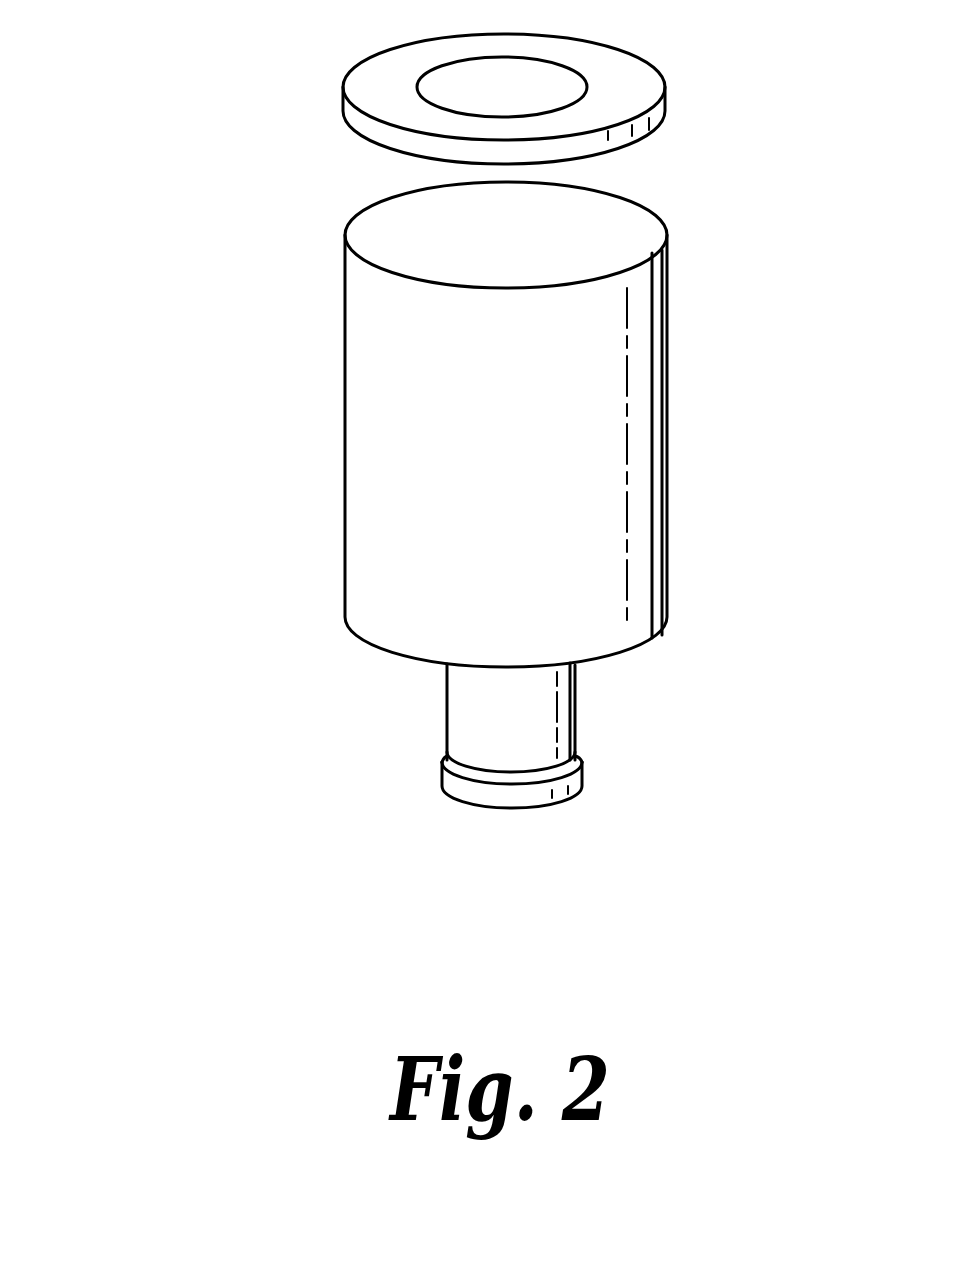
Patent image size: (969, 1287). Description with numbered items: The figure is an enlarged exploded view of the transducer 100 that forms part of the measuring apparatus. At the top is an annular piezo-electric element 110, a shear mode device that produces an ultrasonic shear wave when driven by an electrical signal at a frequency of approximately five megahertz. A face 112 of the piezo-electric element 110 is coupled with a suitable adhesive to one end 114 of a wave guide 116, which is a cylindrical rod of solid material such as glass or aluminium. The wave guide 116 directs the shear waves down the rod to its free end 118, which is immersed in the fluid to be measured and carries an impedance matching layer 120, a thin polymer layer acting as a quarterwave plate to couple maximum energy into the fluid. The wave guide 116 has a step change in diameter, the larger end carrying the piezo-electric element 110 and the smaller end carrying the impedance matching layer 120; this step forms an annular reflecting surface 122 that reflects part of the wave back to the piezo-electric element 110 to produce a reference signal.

The transducer 100 is at (210, 768).
The annular piezo-electric element 110 is at (670, 113).
The face of the piezo-electric element 112 is at (370, 143).
The end of the wave guide 114 is at (655, 232).
The wave guide 116 is at (637, 440).
The free end of the wave guide 118 is at (467, 728).
The impedance matching layer 120 is at (490, 795).
The annular reflecting surface 122 is at (392, 652).